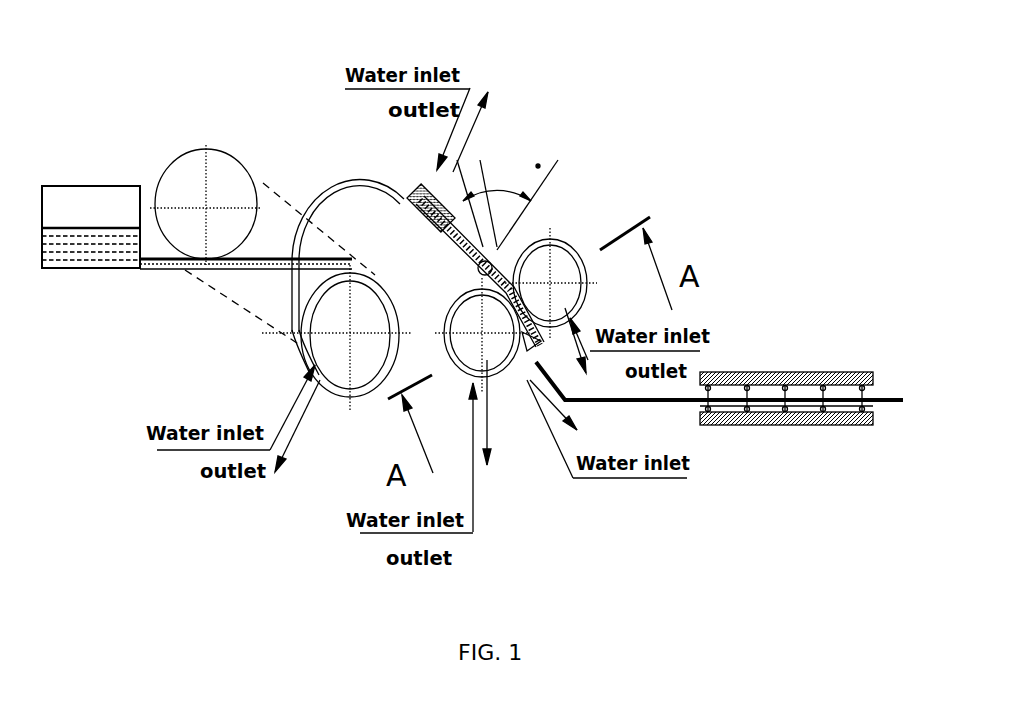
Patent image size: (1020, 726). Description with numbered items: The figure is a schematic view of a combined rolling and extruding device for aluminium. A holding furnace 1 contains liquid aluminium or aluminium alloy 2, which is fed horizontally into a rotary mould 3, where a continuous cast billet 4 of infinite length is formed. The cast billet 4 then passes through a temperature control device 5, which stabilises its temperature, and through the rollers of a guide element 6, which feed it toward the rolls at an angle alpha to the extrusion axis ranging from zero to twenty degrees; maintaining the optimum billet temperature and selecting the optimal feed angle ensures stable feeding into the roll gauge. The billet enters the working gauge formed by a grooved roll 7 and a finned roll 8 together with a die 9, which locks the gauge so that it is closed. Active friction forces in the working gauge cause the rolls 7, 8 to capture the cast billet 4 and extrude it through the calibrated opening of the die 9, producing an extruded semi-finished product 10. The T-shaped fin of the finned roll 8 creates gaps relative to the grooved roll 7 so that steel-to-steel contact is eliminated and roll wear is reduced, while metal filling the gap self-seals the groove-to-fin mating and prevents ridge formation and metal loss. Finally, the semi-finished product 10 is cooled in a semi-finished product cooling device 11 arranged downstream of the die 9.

The holding furnace 1 is at (91, 145).
The liquid aluminium or aluminium alloy 2 is at (91, 300).
The rotary mould 3 is at (290, 337).
The cast billet 4 is at (307, 185).
The temperature control device 5 is at (503, 129).
The guide element 6 is at (539, 186).
The grooved roll 7 is at (583, 231).
The finned roll 8 is at (482, 396).
The die 9 is at (547, 423).
The semi-finished product 10 is at (719, 435).
The semi-finished product cooling device 11 is at (786, 274).